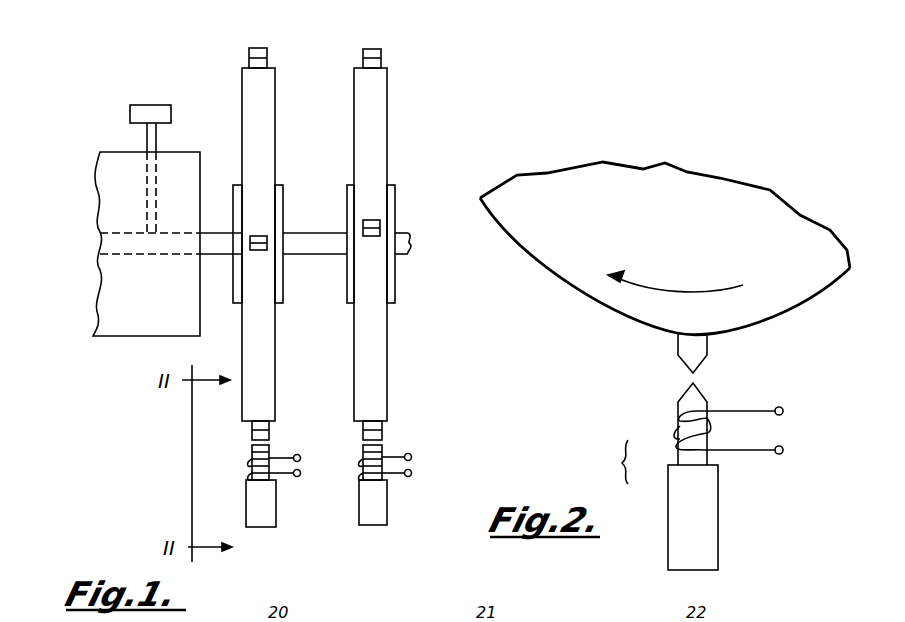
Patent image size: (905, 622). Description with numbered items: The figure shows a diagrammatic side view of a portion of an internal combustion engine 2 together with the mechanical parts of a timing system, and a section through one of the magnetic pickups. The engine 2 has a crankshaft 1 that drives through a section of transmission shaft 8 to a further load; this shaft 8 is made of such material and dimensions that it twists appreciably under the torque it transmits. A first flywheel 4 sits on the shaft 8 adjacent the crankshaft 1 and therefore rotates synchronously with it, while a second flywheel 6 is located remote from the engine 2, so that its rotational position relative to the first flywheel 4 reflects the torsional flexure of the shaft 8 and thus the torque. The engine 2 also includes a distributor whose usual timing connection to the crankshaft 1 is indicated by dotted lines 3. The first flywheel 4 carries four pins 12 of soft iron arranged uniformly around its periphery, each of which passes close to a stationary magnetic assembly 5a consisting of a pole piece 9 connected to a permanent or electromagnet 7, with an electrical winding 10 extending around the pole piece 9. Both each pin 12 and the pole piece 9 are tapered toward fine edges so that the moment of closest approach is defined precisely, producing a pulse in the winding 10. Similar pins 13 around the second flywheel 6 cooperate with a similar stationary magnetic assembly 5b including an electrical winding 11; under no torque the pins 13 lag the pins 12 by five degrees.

In FIG. 1, the crankshaft 1 is at (208, 240).
In FIG. 1, the internal combustion engine 2 is at (172, 152).
In FIG. 1, the dotted lines 3 is at (147, 197).
In FIG. 1, the first flywheel 4 is at (275, 125).
In FIG. 1, the stationary magnetic assembly 5a is at (280, 508).
In FIG. 2, the stationary magnetic assembly 5a is at (612, 462).
In FIG. 1, the stationary magnetic assembly 5b is at (354, 507).
In FIG. 1, the second flywheel 6 is at (376, 141).
In FIG. 1, the permanent or electromagnet 7 is at (130, 112).
In FIG. 2, the permanent or electromagnet 7 is at (708, 516).
In FIG. 1, the transmission shaft 8 is at (311, 242).
In FIG. 2, the pole piece 9 is at (690, 395).
In FIG. 1, the electrical winding 10 is at (252, 462).
In FIG. 2, the electrical winding 10 is at (678, 420).
In FIG. 1, the electrical winding 11 is at (363, 465).
In FIG. 1, the pins 12 is at (265, 50).
In FIG. 2, the pins 12 is at (695, 358).
In FIG. 1, the pins 13 is at (378, 50).